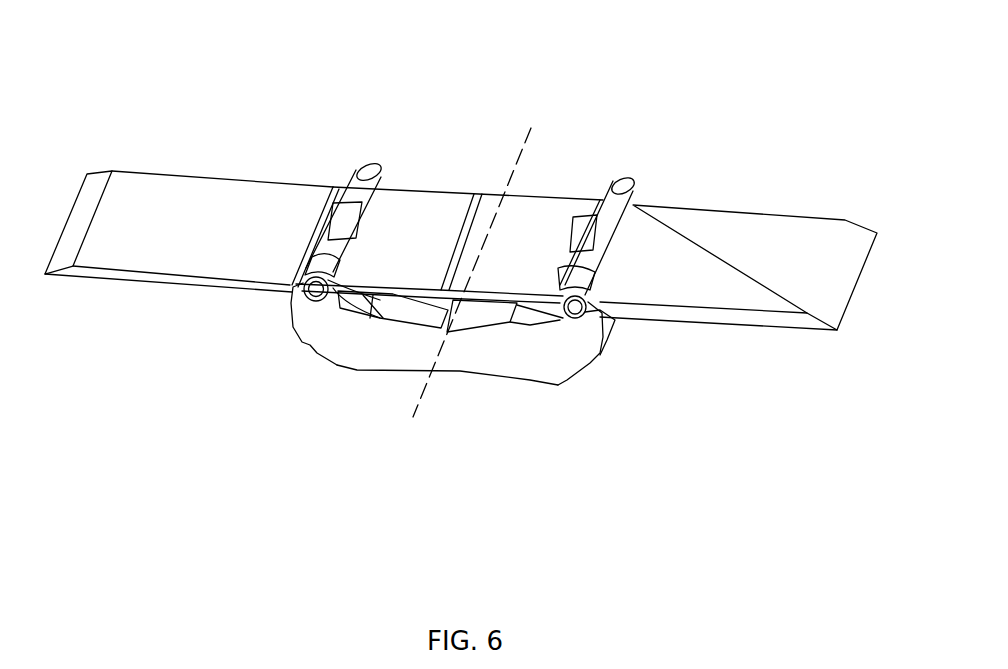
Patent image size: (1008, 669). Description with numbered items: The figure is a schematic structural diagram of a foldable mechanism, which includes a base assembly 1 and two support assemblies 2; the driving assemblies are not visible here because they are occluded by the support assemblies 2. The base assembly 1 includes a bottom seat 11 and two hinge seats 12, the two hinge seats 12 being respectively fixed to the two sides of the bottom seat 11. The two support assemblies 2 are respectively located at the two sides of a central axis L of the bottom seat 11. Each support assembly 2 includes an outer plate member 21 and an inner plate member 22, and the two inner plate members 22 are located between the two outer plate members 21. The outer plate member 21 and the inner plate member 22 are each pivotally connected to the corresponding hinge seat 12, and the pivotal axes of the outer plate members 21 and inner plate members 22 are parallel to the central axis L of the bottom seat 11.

The base assembly 1 is at (297, 478).
The bottom seat 11 is at (465, 365).
The hinge seat 12 is at (322, 307).
The support assembly 2 is at (263, 100).
The outer plate member 21 is at (227, 206).
The inner plate member 22 is at (410, 207).
The central axis L is at (472, 263).